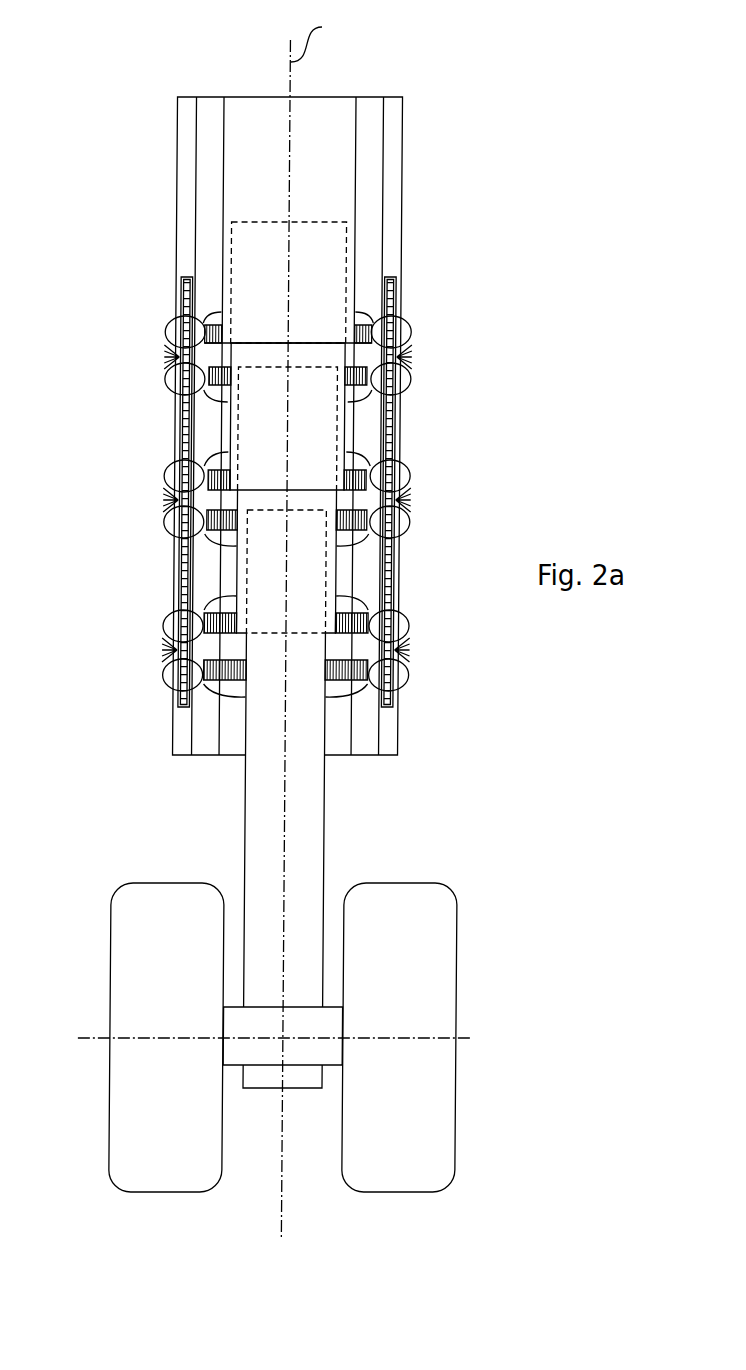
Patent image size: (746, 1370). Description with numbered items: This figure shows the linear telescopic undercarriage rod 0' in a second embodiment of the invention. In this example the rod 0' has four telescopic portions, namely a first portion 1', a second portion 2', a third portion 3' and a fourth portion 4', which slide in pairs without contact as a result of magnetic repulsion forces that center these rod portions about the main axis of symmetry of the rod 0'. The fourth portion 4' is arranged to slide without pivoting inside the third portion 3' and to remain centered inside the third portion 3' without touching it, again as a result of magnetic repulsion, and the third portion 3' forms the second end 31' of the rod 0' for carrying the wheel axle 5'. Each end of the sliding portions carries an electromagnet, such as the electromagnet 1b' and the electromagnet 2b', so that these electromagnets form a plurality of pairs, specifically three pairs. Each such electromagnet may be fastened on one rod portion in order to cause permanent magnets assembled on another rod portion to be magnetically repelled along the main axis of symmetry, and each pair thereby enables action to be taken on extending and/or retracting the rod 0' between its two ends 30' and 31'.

The linear telescopic undercarriage rod 0' is at (338, 627).
The first telescopic portion 1' is at (242, 248).
The electromagnet 1b' is at (333, 327).
The second telescopic portion 2' is at (227, 416).
The electromagnet 2b' is at (333, 428).
The third telescopic portion 3' is at (238, 561).
The fourth telescopic portion 4' is at (236, 820).
The wheel axle 5' is at (282, 1106).
The first end of the rod 30' is at (282, 395).
The second end of the rod 31' is at (286, 1136).